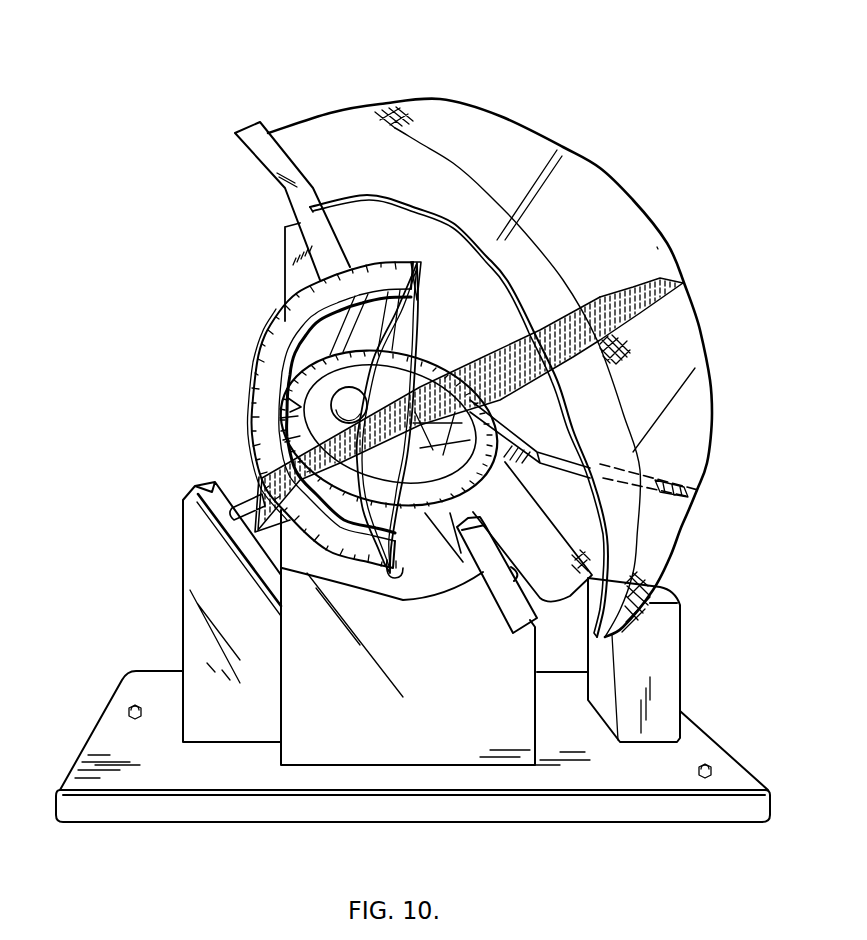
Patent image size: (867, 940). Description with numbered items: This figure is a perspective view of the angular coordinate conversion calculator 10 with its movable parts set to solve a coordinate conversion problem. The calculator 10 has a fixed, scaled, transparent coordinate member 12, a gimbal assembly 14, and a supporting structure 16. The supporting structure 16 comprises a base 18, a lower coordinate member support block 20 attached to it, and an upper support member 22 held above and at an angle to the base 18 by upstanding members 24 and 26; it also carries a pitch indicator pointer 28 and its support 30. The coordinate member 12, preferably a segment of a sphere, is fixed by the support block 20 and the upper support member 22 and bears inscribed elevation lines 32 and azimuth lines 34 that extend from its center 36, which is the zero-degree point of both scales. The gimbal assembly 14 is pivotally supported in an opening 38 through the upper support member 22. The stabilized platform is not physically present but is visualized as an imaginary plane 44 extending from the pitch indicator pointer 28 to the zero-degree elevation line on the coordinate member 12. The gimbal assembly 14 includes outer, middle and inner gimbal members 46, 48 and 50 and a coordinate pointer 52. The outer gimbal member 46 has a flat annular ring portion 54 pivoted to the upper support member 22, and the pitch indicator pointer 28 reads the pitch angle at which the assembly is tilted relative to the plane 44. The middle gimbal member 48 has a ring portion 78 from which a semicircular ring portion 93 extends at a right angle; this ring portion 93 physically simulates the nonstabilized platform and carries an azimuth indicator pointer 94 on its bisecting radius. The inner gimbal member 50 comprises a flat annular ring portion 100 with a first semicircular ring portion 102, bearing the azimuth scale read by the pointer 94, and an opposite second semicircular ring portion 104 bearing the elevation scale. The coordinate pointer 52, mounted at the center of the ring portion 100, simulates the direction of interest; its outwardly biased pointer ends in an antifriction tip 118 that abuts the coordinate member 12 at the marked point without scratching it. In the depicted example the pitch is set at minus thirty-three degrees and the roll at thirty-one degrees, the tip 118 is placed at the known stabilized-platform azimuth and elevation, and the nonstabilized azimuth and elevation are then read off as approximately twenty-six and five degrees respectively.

The angular coordinate conversion calculator 10 is at (603, 150).
The coordinate member 12 is at (704, 335).
The gimbal assembly 14 is at (250, 364).
The supporting structure 16 is at (262, 822).
The base 18 is at (482, 812).
The lower coordinate member support block 20 is at (673, 686).
The upper support member 22 is at (255, 175).
The upstanding member 24 is at (522, 664).
The upstanding member 26 is at (293, 294).
The pitch indicator pointer 28 is at (250, 507).
The pointer support 30 is at (187, 574).
The elevation lines 32 is at (628, 338).
The azimuth lines 34 is at (612, 357).
The center of the coordinate member 36 is at (683, 283).
The opening 38 is at (457, 557).
The imaginary plane 44 is at (662, 272).
The outer gimbal member 46 is at (406, 258).
The middle gimbal member 48 is at (393, 533).
The inner gimbal member 50 is at (370, 360).
The coordinate pointer 52 is at (567, 448).
The flat annular ring portion 54 is at (403, 574).
The ring portion 78 is at (418, 307).
The semicircular ring portion 93 is at (290, 420).
The azimuth indicator pointer 94 is at (298, 409).
The flat annular ring portion 100 is at (378, 495).
The first semicircular ring portion 102 is at (290, 350).
The second semicircular ring portion 104 is at (478, 492).
The antifriction tip 118 is at (717, 478).